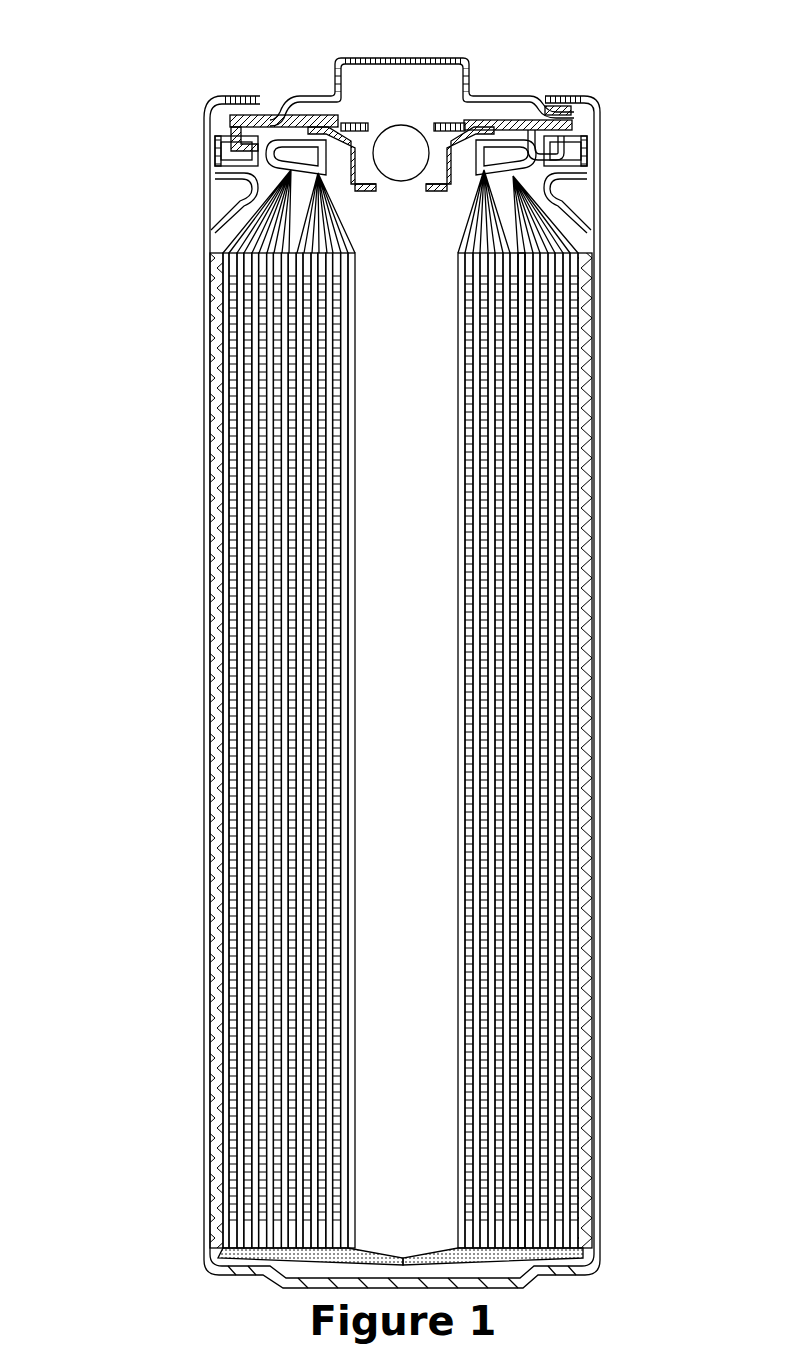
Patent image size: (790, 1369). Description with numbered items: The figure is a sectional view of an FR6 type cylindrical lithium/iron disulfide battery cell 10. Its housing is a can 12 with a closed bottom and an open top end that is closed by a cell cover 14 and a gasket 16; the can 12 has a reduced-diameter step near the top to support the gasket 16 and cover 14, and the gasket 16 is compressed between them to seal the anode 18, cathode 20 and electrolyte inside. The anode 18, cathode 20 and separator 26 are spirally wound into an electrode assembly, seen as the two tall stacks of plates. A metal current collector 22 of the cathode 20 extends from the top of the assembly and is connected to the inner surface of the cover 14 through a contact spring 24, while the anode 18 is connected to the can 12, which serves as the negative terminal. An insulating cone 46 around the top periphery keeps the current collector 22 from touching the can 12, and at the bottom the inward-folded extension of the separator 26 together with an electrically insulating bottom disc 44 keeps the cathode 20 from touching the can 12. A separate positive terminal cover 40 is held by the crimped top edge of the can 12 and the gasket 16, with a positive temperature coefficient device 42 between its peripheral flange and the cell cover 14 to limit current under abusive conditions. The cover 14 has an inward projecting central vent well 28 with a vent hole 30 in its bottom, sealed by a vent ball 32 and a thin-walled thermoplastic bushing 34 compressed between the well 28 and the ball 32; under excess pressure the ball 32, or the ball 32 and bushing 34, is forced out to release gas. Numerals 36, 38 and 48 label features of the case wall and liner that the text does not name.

The cell 10 is at (174, 541).
The can 12 is at (326, 1270).
The cell cover 14 is at (588, 130).
The gasket 16 is at (210, 157).
The anode 18 is at (520, 400).
The cathode 20 is at (495, 365).
The metal current collector 22 is at (487, 188).
The contact spring 24 is at (523, 148).
The separator 26 is at (410, 192).
The central vent well 28 is at (442, 160).
The vent hole 30 is at (445, 223).
The vent ball 32 is at (392, 145).
The thermoplastic bushing 34 is at (443, 116).
The insulating liner 36 is at (582, 820).
The case wall 38 is at (581, 598).
The positive terminal cover 40 is at (323, 77).
The positive temperature coefficient device 42 is at (235, 108).
The electrically insulating bottom disc 44 is at (492, 1240).
The insulating cone 46 is at (223, 226).
The insulating liner 48 is at (205, 375).